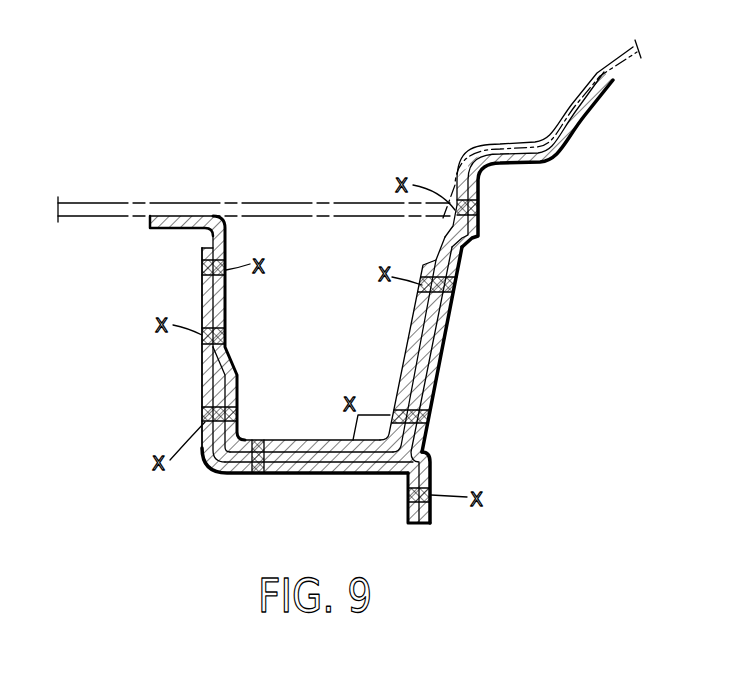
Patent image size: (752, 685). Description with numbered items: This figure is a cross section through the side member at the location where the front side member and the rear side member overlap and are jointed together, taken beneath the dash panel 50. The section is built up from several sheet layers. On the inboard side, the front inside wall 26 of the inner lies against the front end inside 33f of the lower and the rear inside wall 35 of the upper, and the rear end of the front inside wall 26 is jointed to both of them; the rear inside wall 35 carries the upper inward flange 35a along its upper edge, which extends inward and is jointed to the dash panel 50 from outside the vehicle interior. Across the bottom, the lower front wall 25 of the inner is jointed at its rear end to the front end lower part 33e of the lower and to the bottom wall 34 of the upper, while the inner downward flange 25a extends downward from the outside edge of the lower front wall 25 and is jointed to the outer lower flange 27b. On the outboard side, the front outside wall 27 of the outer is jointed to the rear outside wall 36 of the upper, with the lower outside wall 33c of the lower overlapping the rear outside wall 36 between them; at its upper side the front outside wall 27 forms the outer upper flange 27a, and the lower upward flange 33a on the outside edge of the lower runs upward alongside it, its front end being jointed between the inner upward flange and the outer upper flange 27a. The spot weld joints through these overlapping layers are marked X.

The dash panel 50 is at (130, 204).
The upper inward flange 35a is at (175, 228).
The rear inside wall 35 is at (227, 305).
The front inside wall 26 is at (202, 367).
The front end inside 33f is at (212, 397).
The lower front wall 25 is at (222, 472).
The front end lower part 33e is at (287, 463).
The bottom wall 34 is at (293, 440).
The rear outside wall 36 is at (412, 337).
The lower outside wall 33c is at (440, 373).
The front outside wall 27 is at (448, 317).
The outer lower flange 27b is at (432, 467).
The inner downward flange 25a is at (408, 515).
The outer upper flange 27a is at (484, 186).
The lower upward flange 33a is at (462, 200).